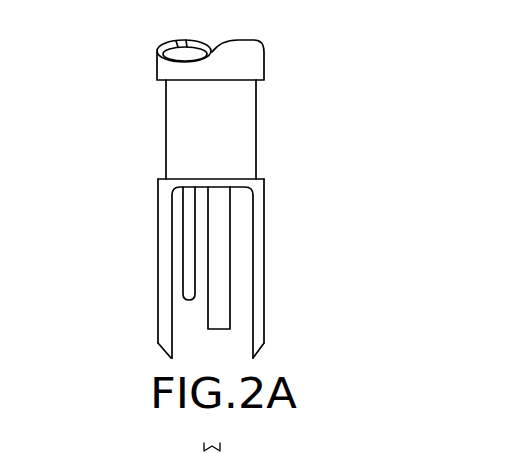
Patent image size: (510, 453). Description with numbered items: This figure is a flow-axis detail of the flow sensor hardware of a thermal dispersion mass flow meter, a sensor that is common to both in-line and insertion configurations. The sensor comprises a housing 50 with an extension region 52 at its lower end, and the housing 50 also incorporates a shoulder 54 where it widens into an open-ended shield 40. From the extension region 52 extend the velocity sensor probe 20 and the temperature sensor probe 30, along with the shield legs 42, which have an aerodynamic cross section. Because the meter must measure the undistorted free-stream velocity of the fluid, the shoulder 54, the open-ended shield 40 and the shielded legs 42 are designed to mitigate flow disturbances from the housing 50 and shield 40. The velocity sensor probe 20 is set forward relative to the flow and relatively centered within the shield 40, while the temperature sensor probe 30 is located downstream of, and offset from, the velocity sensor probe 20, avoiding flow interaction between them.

The housing 50 is at (133, 118).
The extension region 52 is at (247, 128).
The shoulder 54 is at (258, 178).
The open-ended shield 40 is at (285, 262).
The shield legs 42 is at (163, 247).
The temperature sensor probe 30 is at (185, 291).
The velocity sensor probe 20 is at (223, 291).